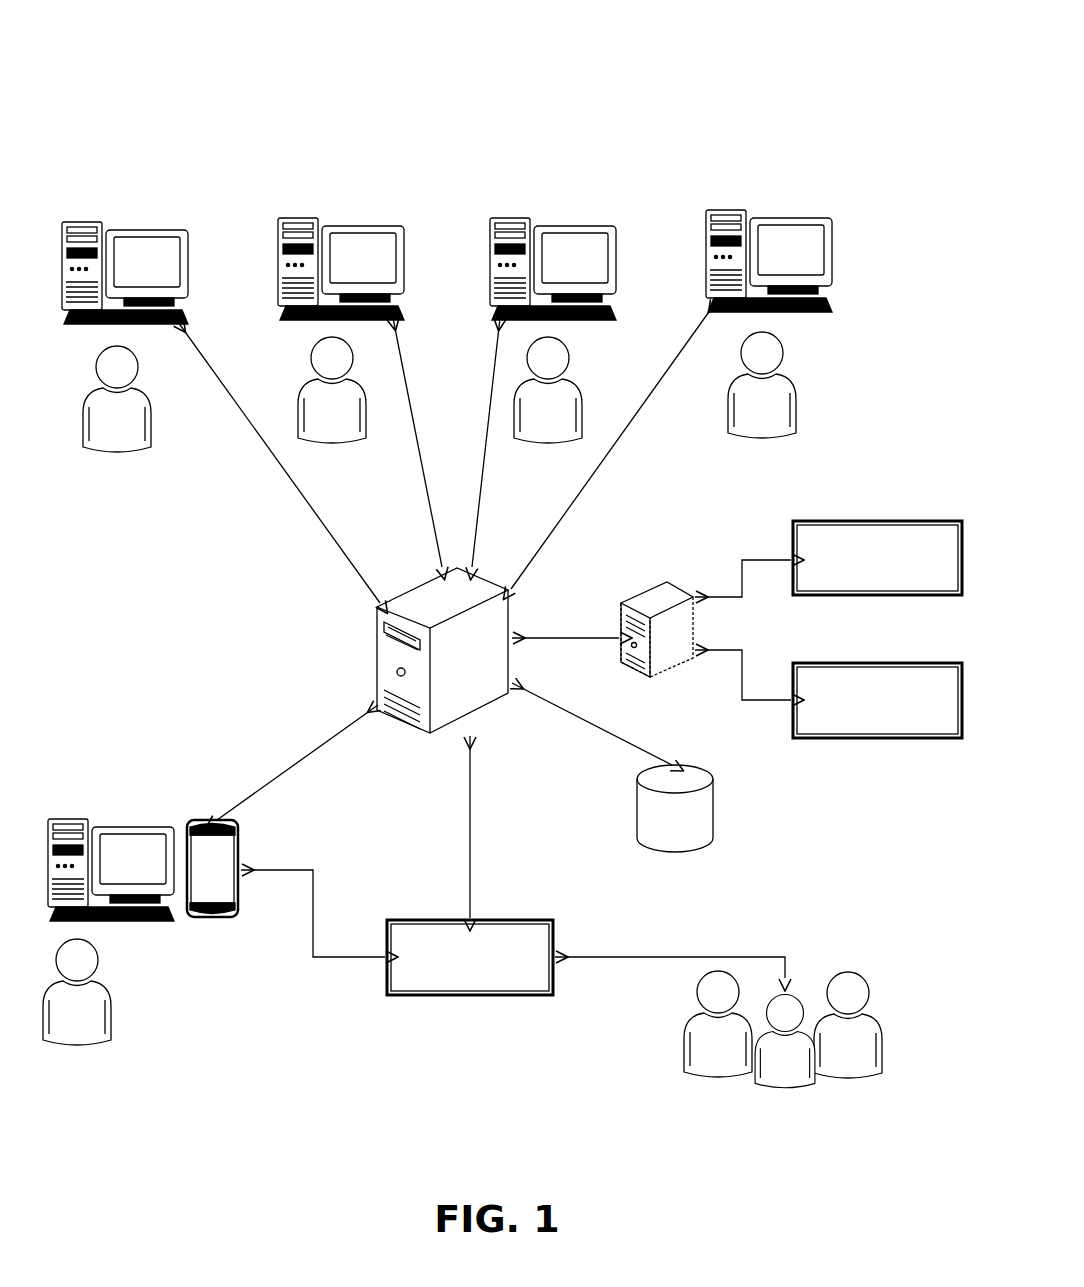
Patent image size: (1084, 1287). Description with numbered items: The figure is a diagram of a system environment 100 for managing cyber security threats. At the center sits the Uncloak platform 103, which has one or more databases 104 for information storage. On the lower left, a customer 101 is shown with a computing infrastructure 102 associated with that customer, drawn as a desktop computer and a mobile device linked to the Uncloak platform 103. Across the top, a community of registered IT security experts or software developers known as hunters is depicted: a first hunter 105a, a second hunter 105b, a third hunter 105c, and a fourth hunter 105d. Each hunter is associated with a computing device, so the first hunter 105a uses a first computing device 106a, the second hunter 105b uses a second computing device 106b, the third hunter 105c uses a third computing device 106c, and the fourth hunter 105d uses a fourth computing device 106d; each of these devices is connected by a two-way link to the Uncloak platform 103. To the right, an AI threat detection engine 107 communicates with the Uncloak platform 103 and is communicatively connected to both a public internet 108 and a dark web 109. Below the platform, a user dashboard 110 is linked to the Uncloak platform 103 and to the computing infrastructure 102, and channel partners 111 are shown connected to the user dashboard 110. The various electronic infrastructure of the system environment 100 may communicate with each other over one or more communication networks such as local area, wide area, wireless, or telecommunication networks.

The system environment 100 is at (703, 52).
The customer 101 is at (88, 1020).
The computing infrastructure 102 is at (132, 822).
The Uncloak platform 103 is at (492, 673).
The database 104 is at (705, 830).
The first hunter 105a is at (131, 428).
The second hunter 105b is at (347, 410).
The third hunter 105c is at (516, 405).
The fourth hunter 105d is at (780, 386).
The first computing device 106a is at (149, 228).
The second computing device 106b is at (364, 224).
The third computing device 106c is at (577, 224).
The fourth computing device 106d is at (790, 216).
The AI threat detection engine 107 is at (658, 604).
The public internet 108 is at (940, 536).
The dark web 109 is at (880, 722).
The user dashboard 110 is at (527, 925).
The channel partners 111 is at (803, 1075).